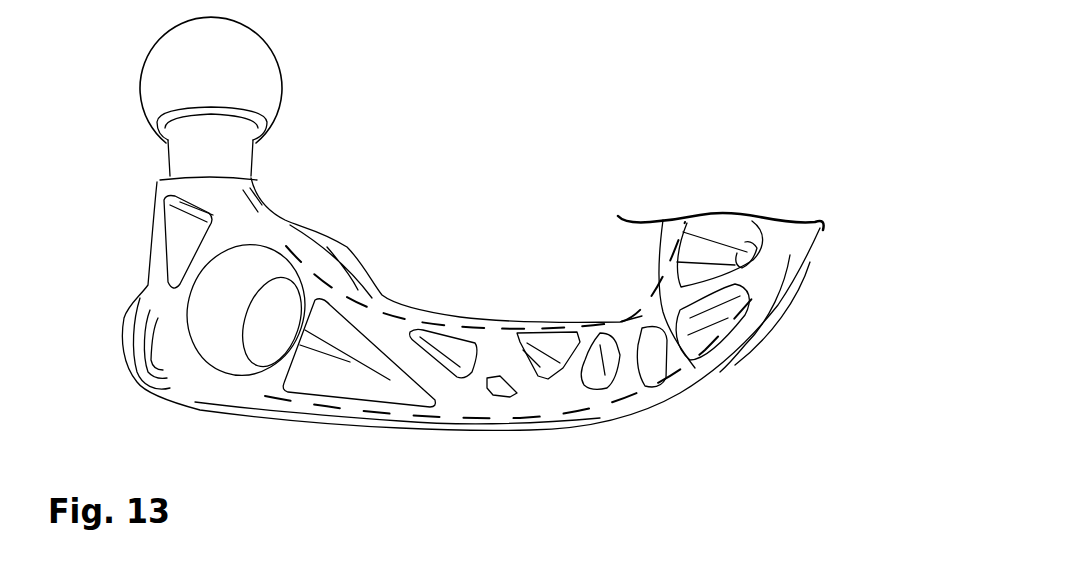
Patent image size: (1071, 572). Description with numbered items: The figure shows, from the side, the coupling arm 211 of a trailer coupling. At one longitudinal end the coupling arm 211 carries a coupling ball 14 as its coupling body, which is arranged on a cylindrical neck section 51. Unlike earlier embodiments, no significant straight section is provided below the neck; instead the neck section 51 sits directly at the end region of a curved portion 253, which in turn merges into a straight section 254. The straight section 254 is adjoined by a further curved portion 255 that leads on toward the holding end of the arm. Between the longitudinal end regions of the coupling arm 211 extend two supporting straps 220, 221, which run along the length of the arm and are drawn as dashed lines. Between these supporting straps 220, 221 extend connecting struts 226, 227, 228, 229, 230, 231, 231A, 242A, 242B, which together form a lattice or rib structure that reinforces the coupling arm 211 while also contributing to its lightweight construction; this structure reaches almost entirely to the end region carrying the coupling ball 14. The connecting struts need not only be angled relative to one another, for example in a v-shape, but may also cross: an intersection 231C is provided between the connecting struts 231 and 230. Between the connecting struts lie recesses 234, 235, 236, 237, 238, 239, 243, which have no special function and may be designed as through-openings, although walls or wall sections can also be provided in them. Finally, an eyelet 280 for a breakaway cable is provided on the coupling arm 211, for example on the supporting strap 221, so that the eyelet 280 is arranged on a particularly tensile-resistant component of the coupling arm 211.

The coupling ball 14 is at (260, 48).
The neck section 51 is at (183, 146).
The coupling arm 211 is at (755, 340).
The supporting strap 220 is at (412, 314).
The supporting strap 221 is at (284, 406).
The connecting strut 226 is at (720, 286).
The connecting strut 227 is at (673, 345).
The connecting strut 228 is at (620, 375).
The connecting strut 229 is at (573, 377).
The connecting strut 230 is at (531, 375).
The connecting strut 231 is at (481, 373).
The connecting strut 231A is at (403, 358).
The intersection 231C is at (475, 352).
The recess 234 is at (750, 257).
The recess 235 is at (698, 321).
The recess 236 is at (655, 350).
The recess 237 is at (600, 350).
The recess 238 is at (560, 353).
The recess 239 is at (497, 377).
The connecting strut 242A is at (285, 343).
The connecting strut 242B is at (212, 247).
The recess 243 is at (177, 225).
The curved portion 253 is at (170, 333).
The straight section 254 is at (543, 410).
The curved portion 255 is at (767, 297).
The eyelet 280 is at (137, 320).